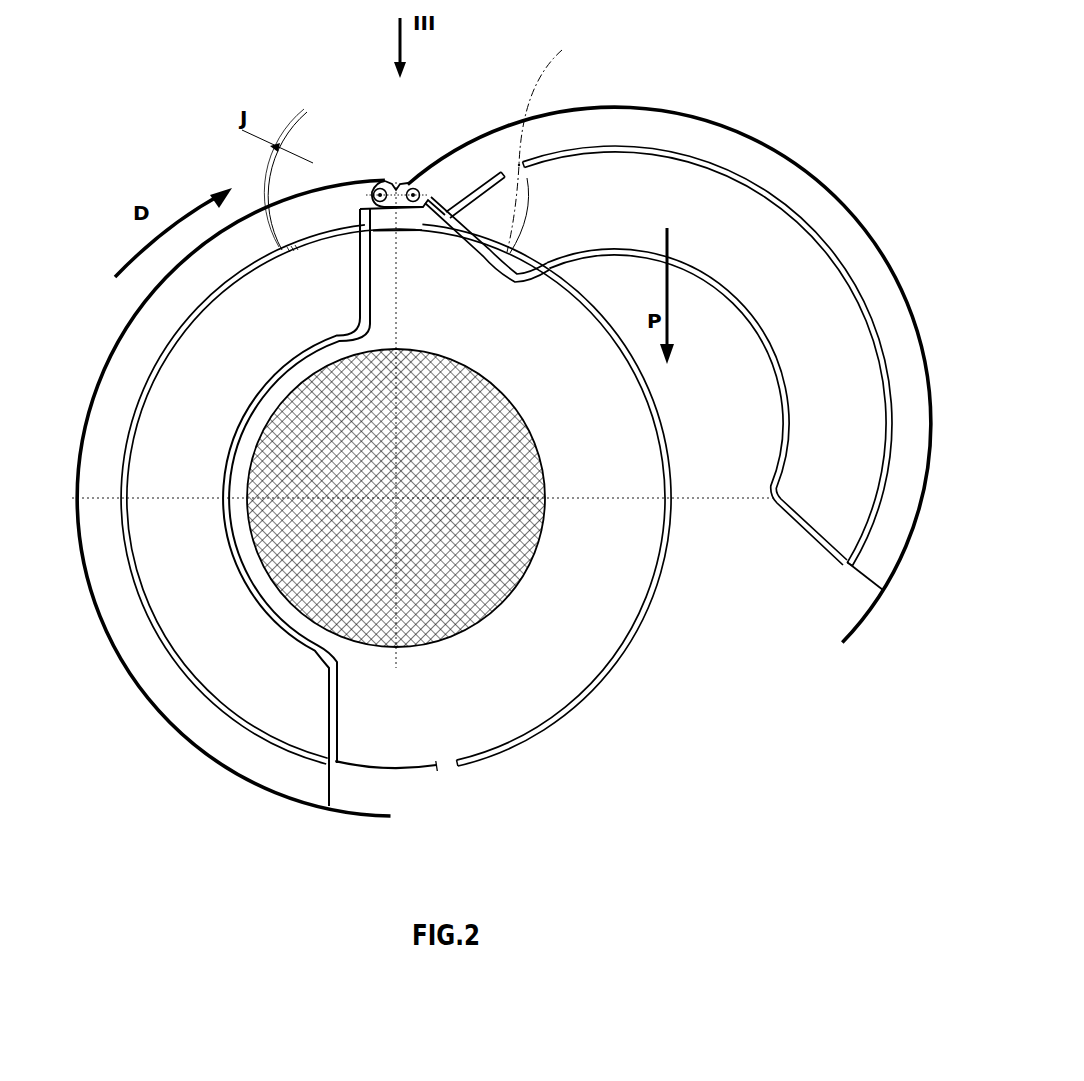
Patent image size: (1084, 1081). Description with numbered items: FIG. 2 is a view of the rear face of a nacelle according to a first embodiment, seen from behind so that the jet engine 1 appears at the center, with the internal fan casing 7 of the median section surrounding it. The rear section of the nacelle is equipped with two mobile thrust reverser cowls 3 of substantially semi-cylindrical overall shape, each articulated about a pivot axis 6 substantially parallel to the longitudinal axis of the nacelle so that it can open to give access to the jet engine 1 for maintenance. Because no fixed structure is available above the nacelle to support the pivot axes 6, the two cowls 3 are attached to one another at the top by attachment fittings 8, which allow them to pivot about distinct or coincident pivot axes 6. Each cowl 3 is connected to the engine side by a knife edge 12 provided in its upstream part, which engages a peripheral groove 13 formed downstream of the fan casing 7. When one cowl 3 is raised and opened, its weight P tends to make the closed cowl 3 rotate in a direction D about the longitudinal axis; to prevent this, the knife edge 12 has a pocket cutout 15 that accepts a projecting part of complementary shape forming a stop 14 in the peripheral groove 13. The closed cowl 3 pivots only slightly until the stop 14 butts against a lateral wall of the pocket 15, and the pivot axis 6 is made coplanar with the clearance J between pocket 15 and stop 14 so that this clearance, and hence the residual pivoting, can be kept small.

The jet engine 1 is at (500, 609).
The mobile thrust reverser cowl 3 is at (767, 172).
The pivot axis 6 is at (395, 214).
The fan casing 7 is at (447, 779).
The attachment fitting 8 is at (405, 172).
The knife edge 12 is at (628, 152).
The peripheral groove 13 is at (660, 398).
The stop 14 is at (550, 144).
The pocket cutout 15 is at (530, 182).